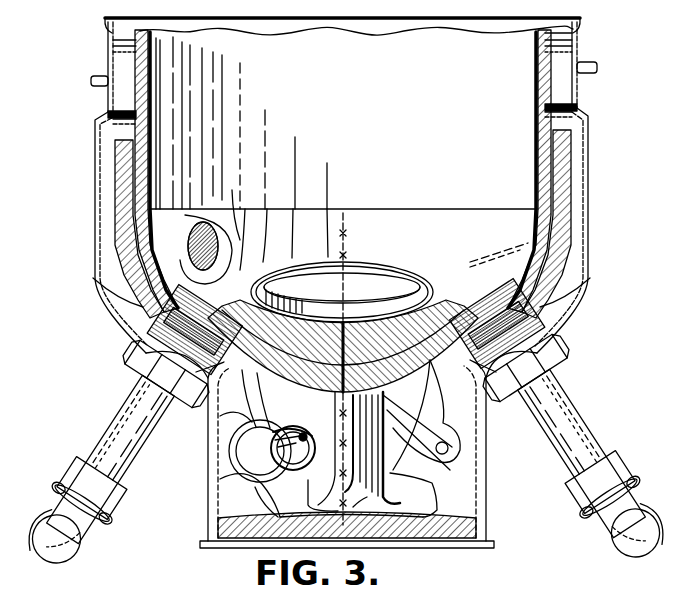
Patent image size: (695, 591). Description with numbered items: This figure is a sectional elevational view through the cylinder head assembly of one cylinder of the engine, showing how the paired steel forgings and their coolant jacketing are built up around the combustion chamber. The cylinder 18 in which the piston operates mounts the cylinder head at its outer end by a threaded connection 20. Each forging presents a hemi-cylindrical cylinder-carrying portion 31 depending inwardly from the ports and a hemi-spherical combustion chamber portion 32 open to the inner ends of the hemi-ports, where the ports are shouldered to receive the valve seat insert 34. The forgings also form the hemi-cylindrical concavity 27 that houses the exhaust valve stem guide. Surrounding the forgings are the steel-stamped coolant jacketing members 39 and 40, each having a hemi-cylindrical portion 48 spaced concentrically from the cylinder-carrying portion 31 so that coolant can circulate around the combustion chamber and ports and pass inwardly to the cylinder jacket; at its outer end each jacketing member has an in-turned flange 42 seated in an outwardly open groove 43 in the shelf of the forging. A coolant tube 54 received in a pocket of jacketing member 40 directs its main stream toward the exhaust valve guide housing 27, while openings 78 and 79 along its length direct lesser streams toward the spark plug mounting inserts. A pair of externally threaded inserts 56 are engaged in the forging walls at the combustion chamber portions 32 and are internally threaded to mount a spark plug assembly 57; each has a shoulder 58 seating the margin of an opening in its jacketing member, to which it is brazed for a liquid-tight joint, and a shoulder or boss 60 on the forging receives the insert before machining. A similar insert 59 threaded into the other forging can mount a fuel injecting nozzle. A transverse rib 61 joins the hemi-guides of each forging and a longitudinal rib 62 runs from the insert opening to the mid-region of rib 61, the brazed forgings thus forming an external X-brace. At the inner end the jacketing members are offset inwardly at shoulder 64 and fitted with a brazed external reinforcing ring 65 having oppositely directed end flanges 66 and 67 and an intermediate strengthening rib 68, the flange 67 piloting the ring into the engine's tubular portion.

The cylinder 18 is at (160, 72).
The threaded connection 20 is at (148, 164).
The hemi-cylindrical exhaust valve stem guide-receiving concavity 27 is at (408, 472).
The hemi-cylindrical cylinder-carrying portion 31 is at (570, 165).
The hemi-spherical combustion chamber portion 32 is at (447, 262).
The valve seat insert 34 is at (358, 275).
The coolant jacketing member 39 is at (92, 232).
The coolant jacketing member 40 is at (600, 170).
The in-turned flange 42 is at (208, 548).
The outwardly open groove 43 is at (208, 518).
The hemi-cylindrical portion 48 is at (96, 140).
The coolant tube 54 is at (208, 481).
The insert 56 is at (158, 325).
The spark plug assembly 57 is at (122, 396).
The shoulder 58 is at (265, 378).
The insert 59 is at (203, 222).
The shoulder or boss 60 is at (524, 257).
The transverse rib 61 is at (384, 414).
The longitudinally extending rib 62 is at (440, 380).
The shoulder 64 is at (108, 112).
The external reinforcing ring 65 is at (577, 44).
The flange 66 is at (596, 67).
The flange 67 is at (106, 22).
The intermediate strengthening rib 68 is at (580, 28).
The opening 78 is at (252, 432).
The opening 79 is at (308, 436).